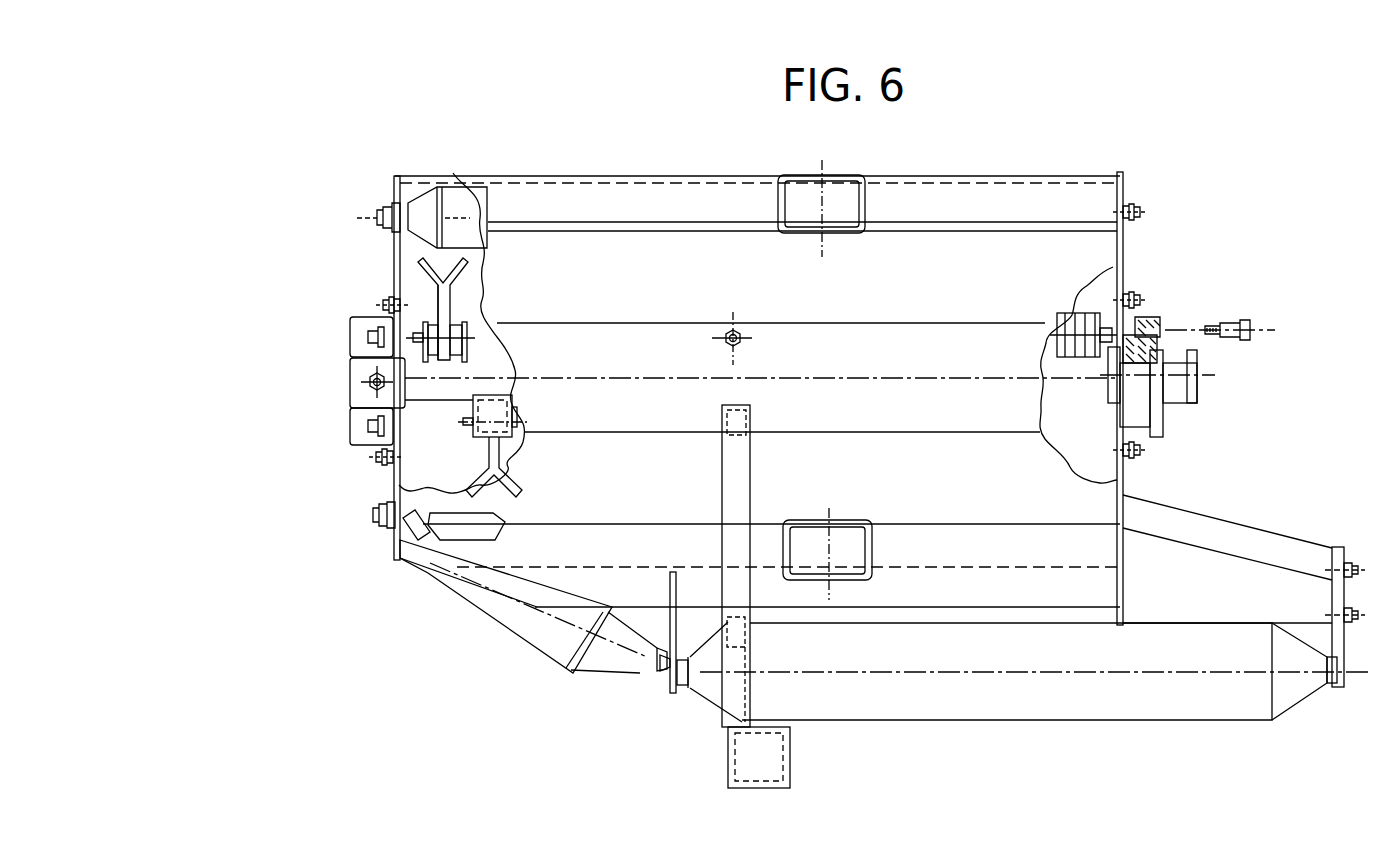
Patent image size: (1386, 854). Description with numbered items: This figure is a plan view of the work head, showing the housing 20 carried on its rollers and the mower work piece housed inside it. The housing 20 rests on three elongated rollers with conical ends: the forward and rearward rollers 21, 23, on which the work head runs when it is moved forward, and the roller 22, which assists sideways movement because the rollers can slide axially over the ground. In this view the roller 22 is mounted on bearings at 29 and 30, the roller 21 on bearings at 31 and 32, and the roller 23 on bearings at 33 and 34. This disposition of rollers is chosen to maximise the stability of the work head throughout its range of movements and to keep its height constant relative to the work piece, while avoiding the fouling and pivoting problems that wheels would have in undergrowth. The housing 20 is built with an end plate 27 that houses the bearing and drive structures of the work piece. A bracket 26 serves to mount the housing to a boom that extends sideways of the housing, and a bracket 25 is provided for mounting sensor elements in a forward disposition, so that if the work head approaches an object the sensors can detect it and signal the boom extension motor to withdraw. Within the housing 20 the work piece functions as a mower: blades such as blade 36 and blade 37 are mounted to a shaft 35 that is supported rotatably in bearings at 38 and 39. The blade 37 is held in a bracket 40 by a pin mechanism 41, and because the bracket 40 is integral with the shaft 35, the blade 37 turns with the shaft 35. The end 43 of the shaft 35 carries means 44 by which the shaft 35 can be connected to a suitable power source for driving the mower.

The housing 20 is at (620, 242).
The roller 21 is at (1034, 710).
The roller 22 is at (508, 620).
The roller 23 is at (474, 214).
The bracket 25 is at (788, 761).
The bracket 26 is at (850, 234).
The end plate 27 is at (370, 490).
The bearing 29 is at (396, 538).
The bearing 30 is at (660, 668).
The bearing 31 is at (690, 698).
The bearing 32 is at (1340, 688).
The bearing 33 is at (376, 205).
The bearing 34 is at (1130, 194).
The shaft 35 is at (437, 398).
The blade 36 is at (401, 270).
The blade 37 is at (472, 490).
The bearing 38 is at (334, 438).
The bearing 39 is at (1158, 300).
The bracket 40 is at (506, 436).
The pin mechanism 41 is at (467, 425).
The end of shaft 43 is at (1200, 369).
The connection means 44 is at (1184, 410).